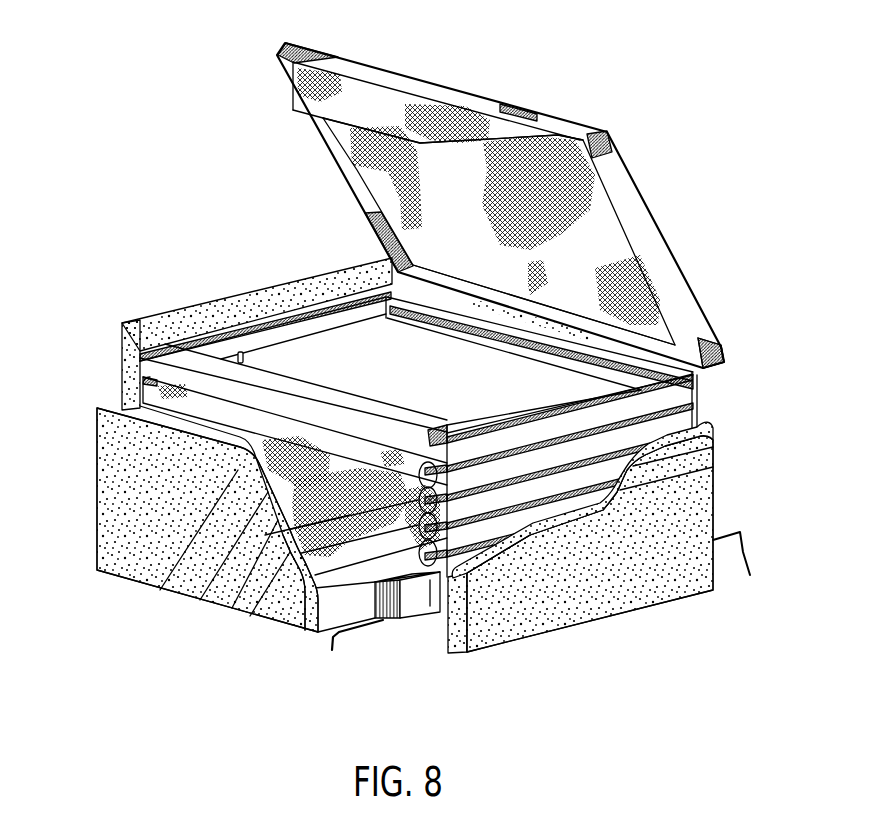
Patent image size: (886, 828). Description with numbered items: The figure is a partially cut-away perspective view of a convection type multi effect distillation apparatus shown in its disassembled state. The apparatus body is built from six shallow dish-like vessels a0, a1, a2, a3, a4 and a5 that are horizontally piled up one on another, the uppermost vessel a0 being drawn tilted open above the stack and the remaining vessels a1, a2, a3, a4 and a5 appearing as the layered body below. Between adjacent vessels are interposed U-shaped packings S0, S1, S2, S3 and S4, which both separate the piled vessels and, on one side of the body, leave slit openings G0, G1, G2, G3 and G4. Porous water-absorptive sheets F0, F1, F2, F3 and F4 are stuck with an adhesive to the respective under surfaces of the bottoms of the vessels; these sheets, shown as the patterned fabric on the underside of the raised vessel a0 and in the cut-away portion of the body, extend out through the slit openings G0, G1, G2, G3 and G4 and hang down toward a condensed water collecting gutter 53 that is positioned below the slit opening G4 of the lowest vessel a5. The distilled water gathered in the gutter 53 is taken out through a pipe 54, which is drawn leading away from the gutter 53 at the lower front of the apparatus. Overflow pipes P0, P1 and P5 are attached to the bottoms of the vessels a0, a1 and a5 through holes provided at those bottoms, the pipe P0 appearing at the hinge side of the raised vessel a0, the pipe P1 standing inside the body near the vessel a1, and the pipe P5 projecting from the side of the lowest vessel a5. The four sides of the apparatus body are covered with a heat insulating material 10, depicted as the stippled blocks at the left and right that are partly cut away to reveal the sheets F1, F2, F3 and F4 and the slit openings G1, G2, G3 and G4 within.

The shallow dish-like vessel a0 is at (430, 88).
The porous water-absorptive sheet F0 is at (518, 136).
The overflow pipe P0 is at (667, 341).
The U-shaped packing S0 is at (693, 367).
The slit opening G0 is at (185, 358).
The overflow pipe P1 is at (240, 351).
The shallow dish-like vessel a1 is at (686, 390).
The U-shaped packing S1 is at (700, 403).
The shallow dish-like vessel a2 is at (690, 434).
The U-shaped packing S2 is at (648, 470).
The shallow dish-like vessel a3 is at (713, 503).
The U-shaped packing S3 is at (650, 492).
The overflow pipe P5 is at (744, 551).
The shallow dish-like vessel a4 is at (570, 507).
The U-shaped packing S4 is at (537, 530).
The shallow dish-like vessel a5 is at (478, 560).
The heat insulating material 10 is at (115, 553).
The porous water-absorptive sheet F1 is at (172, 577).
The porous water-absorptive sheet F2 is at (214, 578).
The porous water-absorptive sheet F3 is at (246, 583).
The porous water-absorptive sheet F4 is at (262, 590).
The slit opening G1 is at (295, 597).
The slit opening G2 is at (333, 605).
The slit opening G3 is at (390, 617).
The slit opening G4 is at (400, 627).
The condensed water collecting gutter 53 is at (421, 620).
The pipe 54 is at (332, 650).